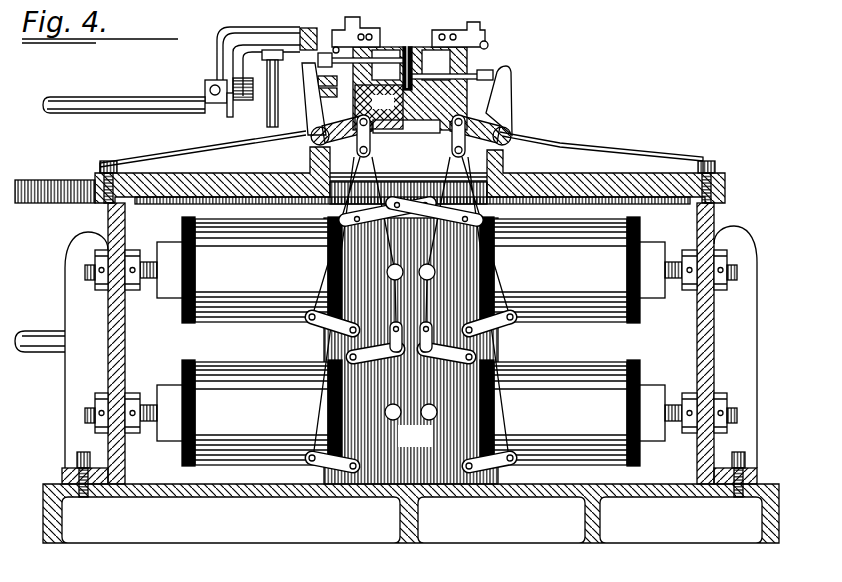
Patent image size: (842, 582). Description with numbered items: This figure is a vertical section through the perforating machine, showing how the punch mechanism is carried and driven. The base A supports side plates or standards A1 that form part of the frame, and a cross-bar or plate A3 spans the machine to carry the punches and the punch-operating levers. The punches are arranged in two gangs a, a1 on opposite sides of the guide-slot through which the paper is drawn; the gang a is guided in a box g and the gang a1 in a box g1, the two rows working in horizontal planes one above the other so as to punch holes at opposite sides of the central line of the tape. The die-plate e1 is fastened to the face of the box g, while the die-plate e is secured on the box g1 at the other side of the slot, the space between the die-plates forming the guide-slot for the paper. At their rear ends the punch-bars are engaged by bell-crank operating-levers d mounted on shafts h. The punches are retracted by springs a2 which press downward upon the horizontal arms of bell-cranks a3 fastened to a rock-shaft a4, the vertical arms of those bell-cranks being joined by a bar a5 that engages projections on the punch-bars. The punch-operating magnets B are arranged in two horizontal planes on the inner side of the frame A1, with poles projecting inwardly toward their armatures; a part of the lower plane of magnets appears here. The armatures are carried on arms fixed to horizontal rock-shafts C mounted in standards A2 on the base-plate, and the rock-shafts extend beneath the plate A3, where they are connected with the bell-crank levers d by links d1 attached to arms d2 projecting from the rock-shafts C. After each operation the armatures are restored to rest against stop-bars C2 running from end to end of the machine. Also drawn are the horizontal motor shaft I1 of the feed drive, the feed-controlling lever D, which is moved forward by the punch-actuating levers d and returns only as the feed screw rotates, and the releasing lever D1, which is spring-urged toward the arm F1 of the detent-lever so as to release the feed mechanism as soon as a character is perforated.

The base A is at (545, 490).
The side plates or standards A1 is at (86, 244).
The standards A2 is at (411, 351).
The cross-bar or plate A3 is at (230, 185).
The punch-operating magnets B is at (411, 341).
The rock-shafts C is at (536, 337).
The stop-bars C2 is at (398, 280).
The feed-controlling lever D is at (332, 80).
The lever D1 is at (328, 97).
The arm of detent-lever F1 is at (286, 78).
The horizontal shaft of motor I1 is at (163, 106).
The gang of punches a is at (436, 65).
The gang of punches a1 is at (386, 65).
The springs a2 is at (349, 29).
The bell-cranks a3 is at (333, 58).
The rock-shaft a4 is at (336, 47).
The bar a5 is at (494, 74).
The operating-levers d is at (309, 100).
The links d1 is at (372, 158).
The arms d2 is at (309, 323).
The die-plate e is at (406, 47).
The die-plate e1 is at (409, 47).
The box g is at (410, 90).
The box g1 is at (379, 107).
The shafts h is at (313, 140).